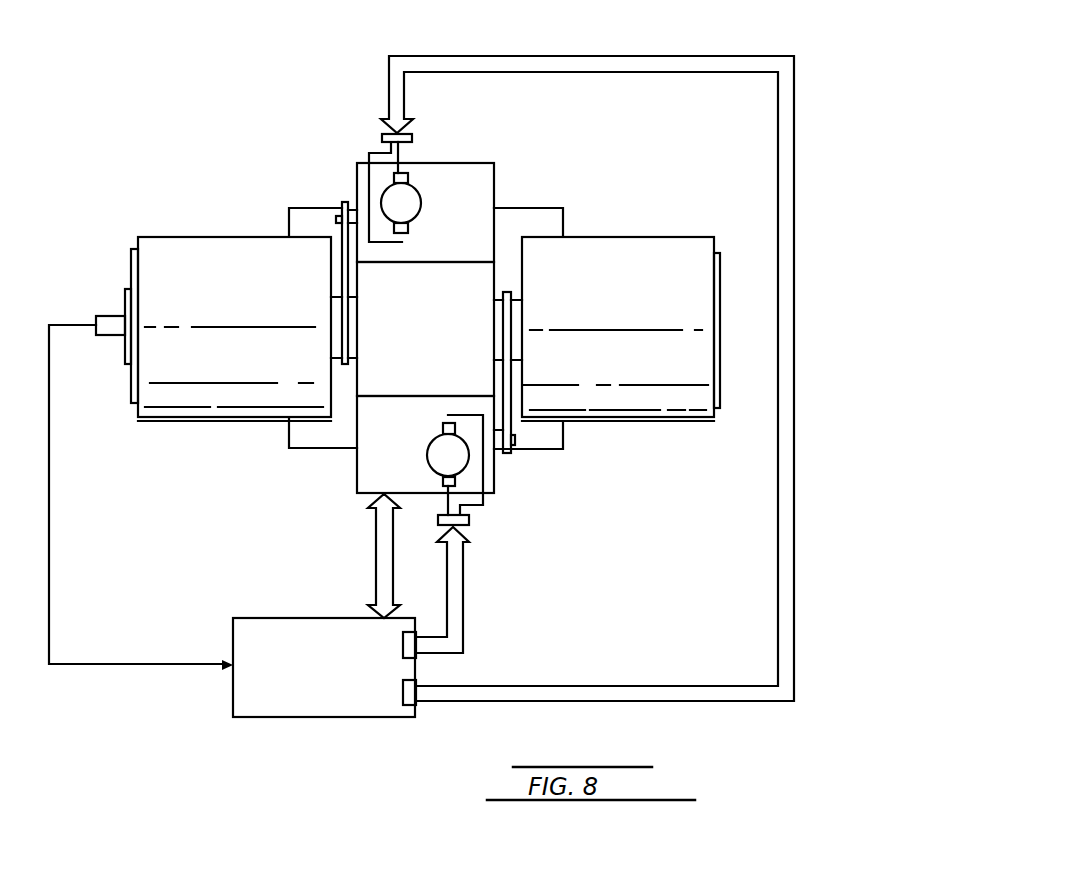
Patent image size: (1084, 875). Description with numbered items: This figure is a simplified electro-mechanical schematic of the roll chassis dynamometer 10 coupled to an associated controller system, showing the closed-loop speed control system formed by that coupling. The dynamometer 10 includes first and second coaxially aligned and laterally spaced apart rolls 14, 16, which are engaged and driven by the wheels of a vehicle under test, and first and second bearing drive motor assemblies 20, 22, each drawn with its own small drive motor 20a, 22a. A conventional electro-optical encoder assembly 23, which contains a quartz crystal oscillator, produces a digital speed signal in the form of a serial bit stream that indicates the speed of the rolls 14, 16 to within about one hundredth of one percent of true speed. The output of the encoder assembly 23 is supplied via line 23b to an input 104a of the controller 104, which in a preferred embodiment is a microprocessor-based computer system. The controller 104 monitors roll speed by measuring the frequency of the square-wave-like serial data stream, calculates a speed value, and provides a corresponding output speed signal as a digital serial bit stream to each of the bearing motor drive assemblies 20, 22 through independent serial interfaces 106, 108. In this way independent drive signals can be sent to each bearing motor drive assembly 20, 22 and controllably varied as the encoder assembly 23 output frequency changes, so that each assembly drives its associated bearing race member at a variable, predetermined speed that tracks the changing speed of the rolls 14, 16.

The roll chassis dynamometer 10 is at (220, 172).
The first roll 14 is at (188, 405).
The second roll 16 is at (658, 413).
The first bearing drive motor assembly 20 is at (504, 168).
The first actuator motor 20a is at (412, 213).
The second bearing drive motor assembly 22 is at (346, 488).
The second actuator motor 22a is at (428, 447).
The encoder assembly 23 is at (108, 302).
The line 23b is at (49, 528).
The controller 104 is at (272, 710).
The input 104a is at (224, 665).
The RS-232 interface 106 is at (410, 700).
The RS-232 interface 108 is at (408, 652).